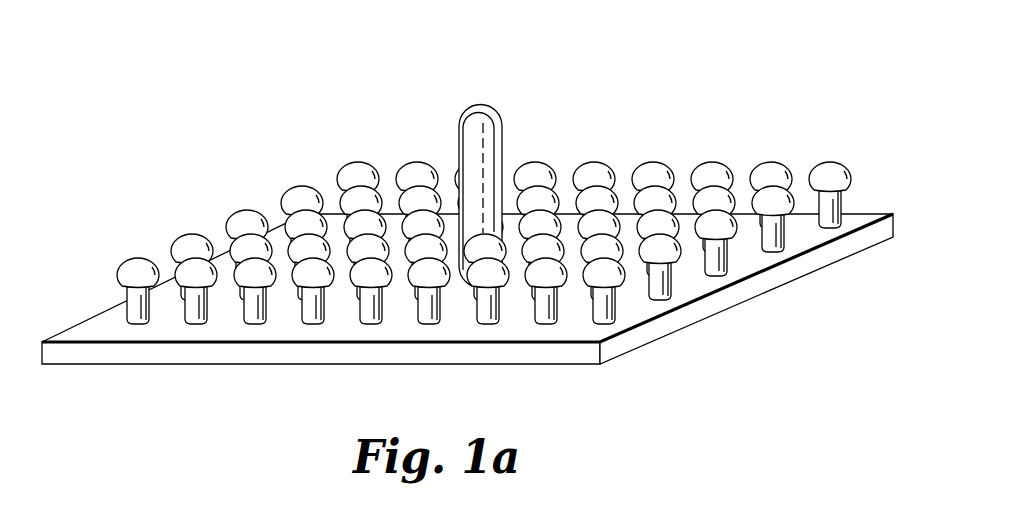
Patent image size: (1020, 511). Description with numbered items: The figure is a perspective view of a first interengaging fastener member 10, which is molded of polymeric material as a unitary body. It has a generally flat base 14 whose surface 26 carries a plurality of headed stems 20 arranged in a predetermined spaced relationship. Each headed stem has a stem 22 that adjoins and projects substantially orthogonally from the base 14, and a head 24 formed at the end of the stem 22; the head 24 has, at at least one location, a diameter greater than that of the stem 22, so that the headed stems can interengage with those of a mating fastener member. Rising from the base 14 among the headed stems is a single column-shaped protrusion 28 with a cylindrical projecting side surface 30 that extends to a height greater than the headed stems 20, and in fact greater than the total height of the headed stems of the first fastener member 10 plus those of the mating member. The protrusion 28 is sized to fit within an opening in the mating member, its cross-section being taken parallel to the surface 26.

The first interengaging fastener member 10 is at (467, 212).
The base 14 is at (631, 339).
The headed stems 20 is at (823, 159).
The stem 22 is at (242, 303).
The head 24 is at (402, 162).
The surface 26 is at (343, 330).
The protrusion 28 is at (498, 172).
The cylindrical projecting side surface 30 is at (459, 146).